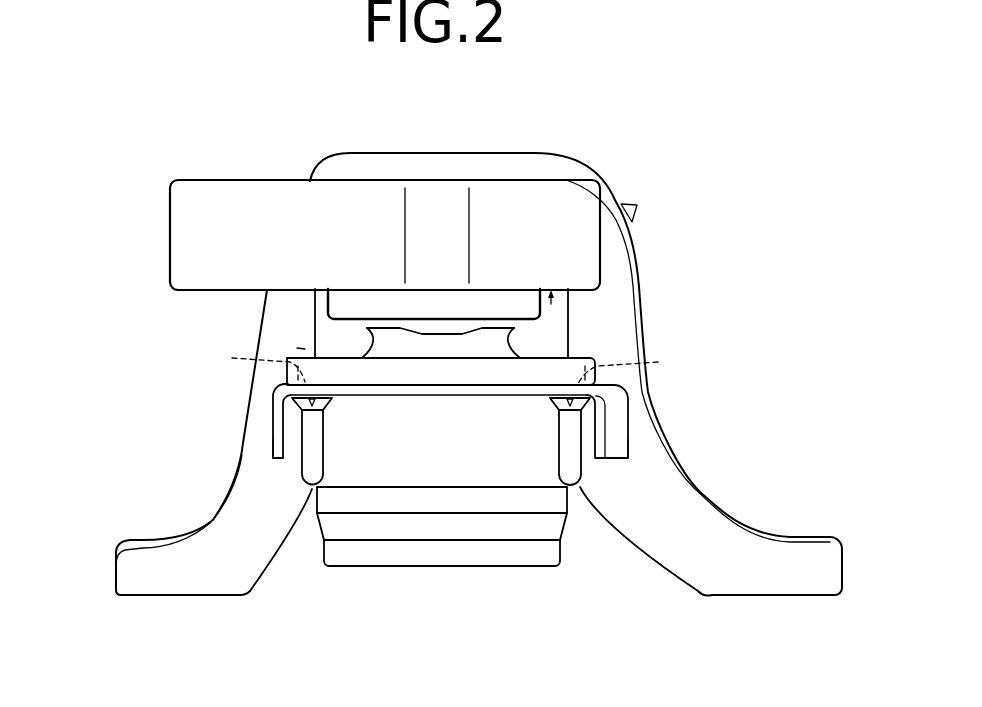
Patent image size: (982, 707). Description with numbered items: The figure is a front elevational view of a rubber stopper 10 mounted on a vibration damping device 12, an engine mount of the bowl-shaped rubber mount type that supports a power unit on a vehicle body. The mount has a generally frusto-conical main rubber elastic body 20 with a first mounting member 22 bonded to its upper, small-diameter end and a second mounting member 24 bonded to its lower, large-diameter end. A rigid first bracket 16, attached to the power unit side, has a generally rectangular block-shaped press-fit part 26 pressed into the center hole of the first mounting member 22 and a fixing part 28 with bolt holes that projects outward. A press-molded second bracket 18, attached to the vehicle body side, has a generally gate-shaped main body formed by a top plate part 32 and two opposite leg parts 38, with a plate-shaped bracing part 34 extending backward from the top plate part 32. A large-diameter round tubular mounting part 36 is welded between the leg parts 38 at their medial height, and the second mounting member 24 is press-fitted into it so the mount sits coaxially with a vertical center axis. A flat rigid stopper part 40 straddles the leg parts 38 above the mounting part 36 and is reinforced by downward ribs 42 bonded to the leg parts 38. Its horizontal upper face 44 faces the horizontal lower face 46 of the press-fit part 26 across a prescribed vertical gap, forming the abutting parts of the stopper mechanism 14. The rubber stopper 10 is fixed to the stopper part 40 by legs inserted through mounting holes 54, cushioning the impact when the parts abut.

The rubber stopper 10 is at (552, 350).
The vibration damping device 12 is at (576, 557).
The stopper mechanism 14 is at (300, 337).
The first bracket 16 is at (217, 168).
The second bracket 18 is at (703, 476).
The main rubber elastic body 20 is at (485, 342).
The first mounting member 22 is at (545, 321).
The second mounting member 24 is at (350, 497).
The press-fit part 26 is at (333, 303).
The fixing part 28 is at (262, 192).
The top plate part 32 is at (462, 163).
The bracing part 34 is at (637, 213).
The mounting part 36 is at (402, 466).
The leg parts 38 is at (257, 398).
The stopper part 40 is at (443, 390).
The ribs 42 is at (272, 440).
The upper face 44 is at (475, 384).
The lower face 46 is at (402, 318).
The mounting holes 54 is at (445, 363).